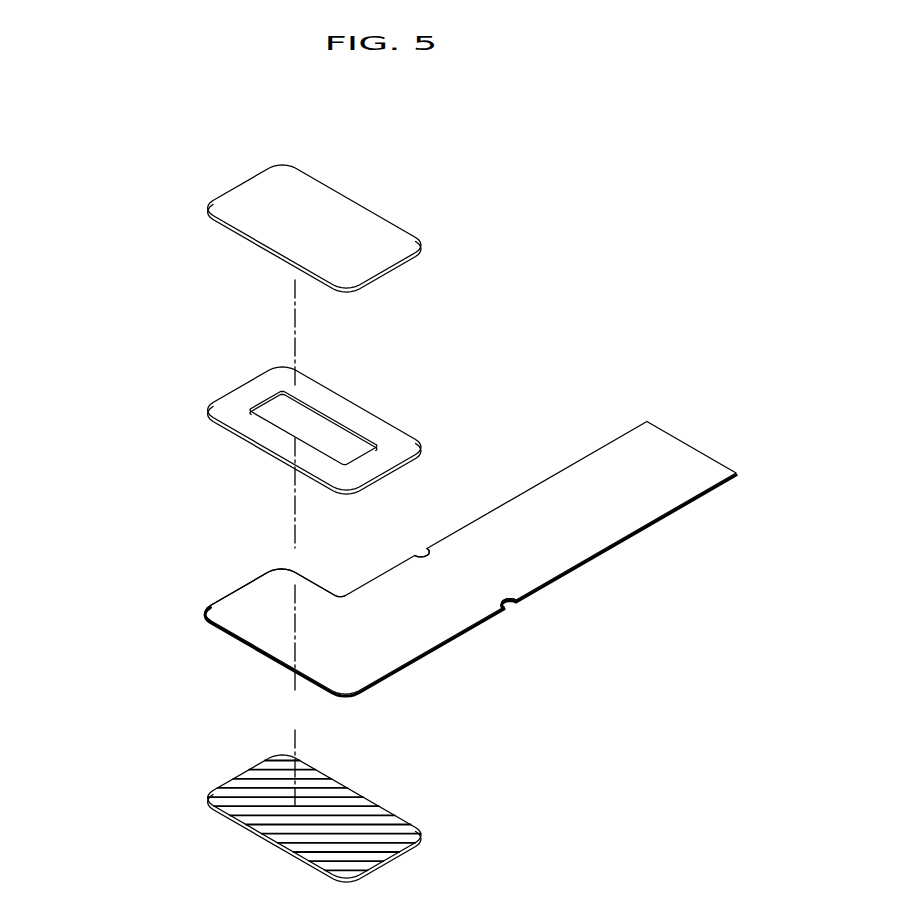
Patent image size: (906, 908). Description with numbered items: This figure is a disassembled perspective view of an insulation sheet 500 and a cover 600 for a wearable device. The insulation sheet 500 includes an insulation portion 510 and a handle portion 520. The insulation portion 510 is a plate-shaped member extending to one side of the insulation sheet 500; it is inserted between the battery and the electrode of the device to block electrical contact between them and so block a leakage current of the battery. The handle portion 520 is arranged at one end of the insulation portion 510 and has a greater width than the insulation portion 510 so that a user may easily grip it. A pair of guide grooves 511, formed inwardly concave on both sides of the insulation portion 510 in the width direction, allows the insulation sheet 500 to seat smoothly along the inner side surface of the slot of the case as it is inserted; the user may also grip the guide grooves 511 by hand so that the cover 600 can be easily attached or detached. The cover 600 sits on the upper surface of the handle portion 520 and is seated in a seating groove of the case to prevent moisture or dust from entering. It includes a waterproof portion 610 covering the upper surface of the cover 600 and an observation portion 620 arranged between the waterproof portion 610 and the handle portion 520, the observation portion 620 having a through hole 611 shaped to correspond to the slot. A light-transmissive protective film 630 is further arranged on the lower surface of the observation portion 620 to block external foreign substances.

The insulation sheet 500 is at (694, 433).
The insulation portion 510 is at (663, 517).
The guide grooves 511 is at (506, 600).
The handle portion 520 is at (375, 680).
The cover 600 is at (113, 198).
The waterproof portion 610 is at (207, 208).
The opening 611 is at (350, 428).
The observation portion 620 is at (208, 410).
The protective film 630 is at (207, 798).